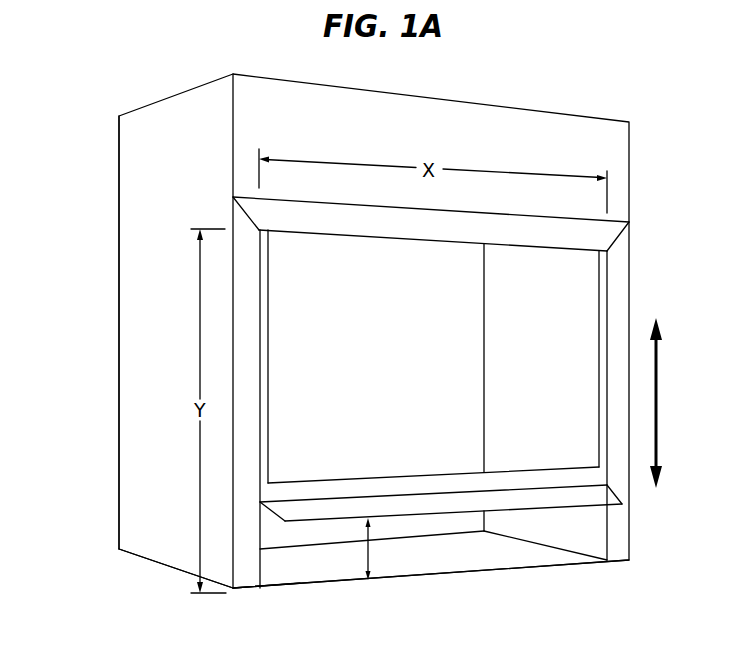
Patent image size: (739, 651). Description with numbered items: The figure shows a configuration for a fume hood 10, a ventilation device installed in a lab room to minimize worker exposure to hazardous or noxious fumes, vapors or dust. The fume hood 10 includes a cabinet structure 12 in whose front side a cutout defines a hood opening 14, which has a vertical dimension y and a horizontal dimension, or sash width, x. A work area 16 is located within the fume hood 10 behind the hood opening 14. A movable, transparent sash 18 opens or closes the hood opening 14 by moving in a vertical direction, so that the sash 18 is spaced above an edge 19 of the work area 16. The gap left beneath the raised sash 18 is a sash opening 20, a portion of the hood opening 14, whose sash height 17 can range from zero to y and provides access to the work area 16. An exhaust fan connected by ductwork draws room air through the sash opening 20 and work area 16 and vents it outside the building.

The fume hood 10 is at (92, 153).
The cabinet structure 12 is at (118, 367).
The hood opening 14 is at (285, 294).
The work area 16 is at (508, 553).
The sash height 17 is at (370, 549).
The sash 18 is at (582, 285).
The edge 19 is at (420, 577).
The sash opening 20 is at (285, 585).